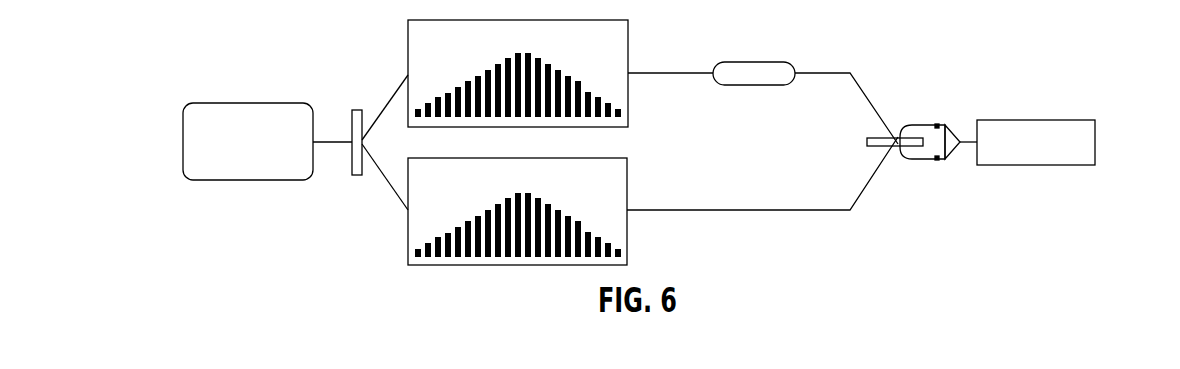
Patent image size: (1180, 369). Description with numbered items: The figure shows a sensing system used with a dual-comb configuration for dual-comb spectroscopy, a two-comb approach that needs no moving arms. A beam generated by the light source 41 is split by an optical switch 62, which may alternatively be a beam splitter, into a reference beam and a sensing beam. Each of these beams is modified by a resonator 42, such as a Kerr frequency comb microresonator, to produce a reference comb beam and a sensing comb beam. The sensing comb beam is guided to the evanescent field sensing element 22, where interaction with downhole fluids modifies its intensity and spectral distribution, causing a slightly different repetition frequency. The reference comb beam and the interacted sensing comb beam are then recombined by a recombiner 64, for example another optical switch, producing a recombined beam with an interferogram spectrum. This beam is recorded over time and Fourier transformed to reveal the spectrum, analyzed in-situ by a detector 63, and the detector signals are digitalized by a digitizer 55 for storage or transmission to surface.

The light source 41 is at (214, 103).
The optical switch 62 is at (357, 110).
The evanescent field sensing element 22 is at (732, 62).
The resonator 42 is at (628, 185).
The recombiner 64 is at (893, 134).
The detector 63 is at (936, 160).
The digitizer 55 is at (1080, 120).